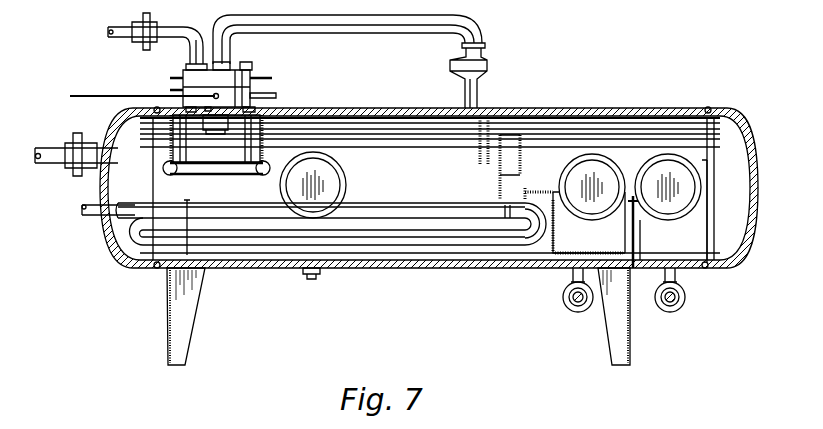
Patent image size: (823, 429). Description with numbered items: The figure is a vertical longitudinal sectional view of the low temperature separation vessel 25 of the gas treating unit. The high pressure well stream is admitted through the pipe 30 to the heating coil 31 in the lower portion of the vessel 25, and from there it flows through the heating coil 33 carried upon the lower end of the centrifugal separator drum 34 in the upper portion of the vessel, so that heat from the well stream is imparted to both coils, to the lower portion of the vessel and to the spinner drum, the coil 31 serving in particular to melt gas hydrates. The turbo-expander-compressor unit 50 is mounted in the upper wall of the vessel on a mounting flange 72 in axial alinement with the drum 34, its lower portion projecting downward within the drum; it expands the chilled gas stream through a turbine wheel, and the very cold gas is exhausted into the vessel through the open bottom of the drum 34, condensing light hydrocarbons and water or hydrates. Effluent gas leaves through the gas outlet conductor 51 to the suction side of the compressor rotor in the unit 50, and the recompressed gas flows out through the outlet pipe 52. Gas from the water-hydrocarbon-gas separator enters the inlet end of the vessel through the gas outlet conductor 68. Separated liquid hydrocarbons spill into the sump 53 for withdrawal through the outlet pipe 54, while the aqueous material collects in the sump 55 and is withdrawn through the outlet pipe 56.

The low temperature separation vessel 25 is at (428, 265).
The pipe 30 is at (90, 218).
The heating coil 31 is at (380, 250).
The heating coil 33 is at (236, 178).
The centrifugal separator drum 34 is at (264, 146).
The turbo-expander-compressor unit 50 is at (230, 78).
The gas outlet conductor 51 is at (468, 95).
The outlet pipe 52 is at (119, 40).
The sump 53 is at (570, 247).
The outlet pipe 54 is at (565, 298).
The sump 55 is at (693, 243).
The outlet pipe 56 is at (688, 304).
The gas outlet conductor 68 is at (50, 150).
The mounting flange 72 is at (238, 118).